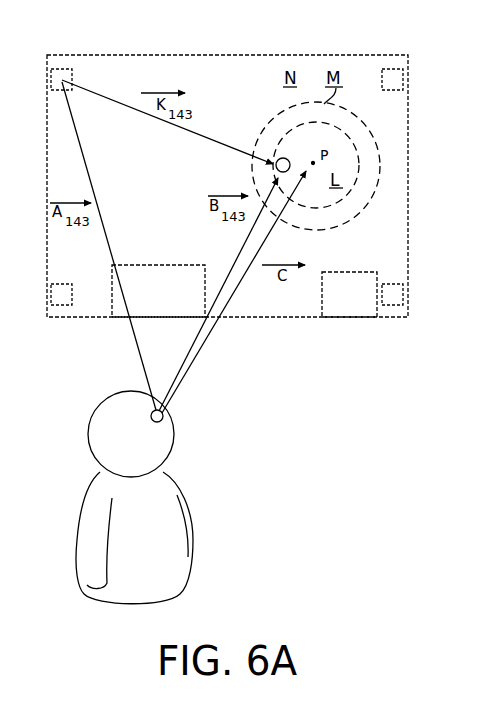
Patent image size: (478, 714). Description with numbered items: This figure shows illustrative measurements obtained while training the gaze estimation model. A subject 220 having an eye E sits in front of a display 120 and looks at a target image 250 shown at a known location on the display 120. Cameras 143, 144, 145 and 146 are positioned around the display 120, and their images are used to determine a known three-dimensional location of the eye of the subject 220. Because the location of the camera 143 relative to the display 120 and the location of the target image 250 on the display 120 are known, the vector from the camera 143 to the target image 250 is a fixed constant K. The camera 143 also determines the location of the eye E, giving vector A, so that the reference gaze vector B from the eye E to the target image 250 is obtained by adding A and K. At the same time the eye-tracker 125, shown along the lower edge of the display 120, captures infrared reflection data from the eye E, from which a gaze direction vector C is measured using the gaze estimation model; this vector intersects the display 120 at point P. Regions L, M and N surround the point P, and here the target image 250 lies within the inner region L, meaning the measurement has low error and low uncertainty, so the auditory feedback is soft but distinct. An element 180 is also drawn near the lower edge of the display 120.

The display 120 is at (130, 66).
The camera 143 is at (62, 72).
The camera 144 is at (62, 298).
The camera 145 is at (393, 72).
The camera 146 is at (392, 298).
The eye-tracker 125 is at (140, 264).
The display element 180 is at (372, 307).
The target image 250 is at (278, 158).
The subject 220 is at (193, 532).